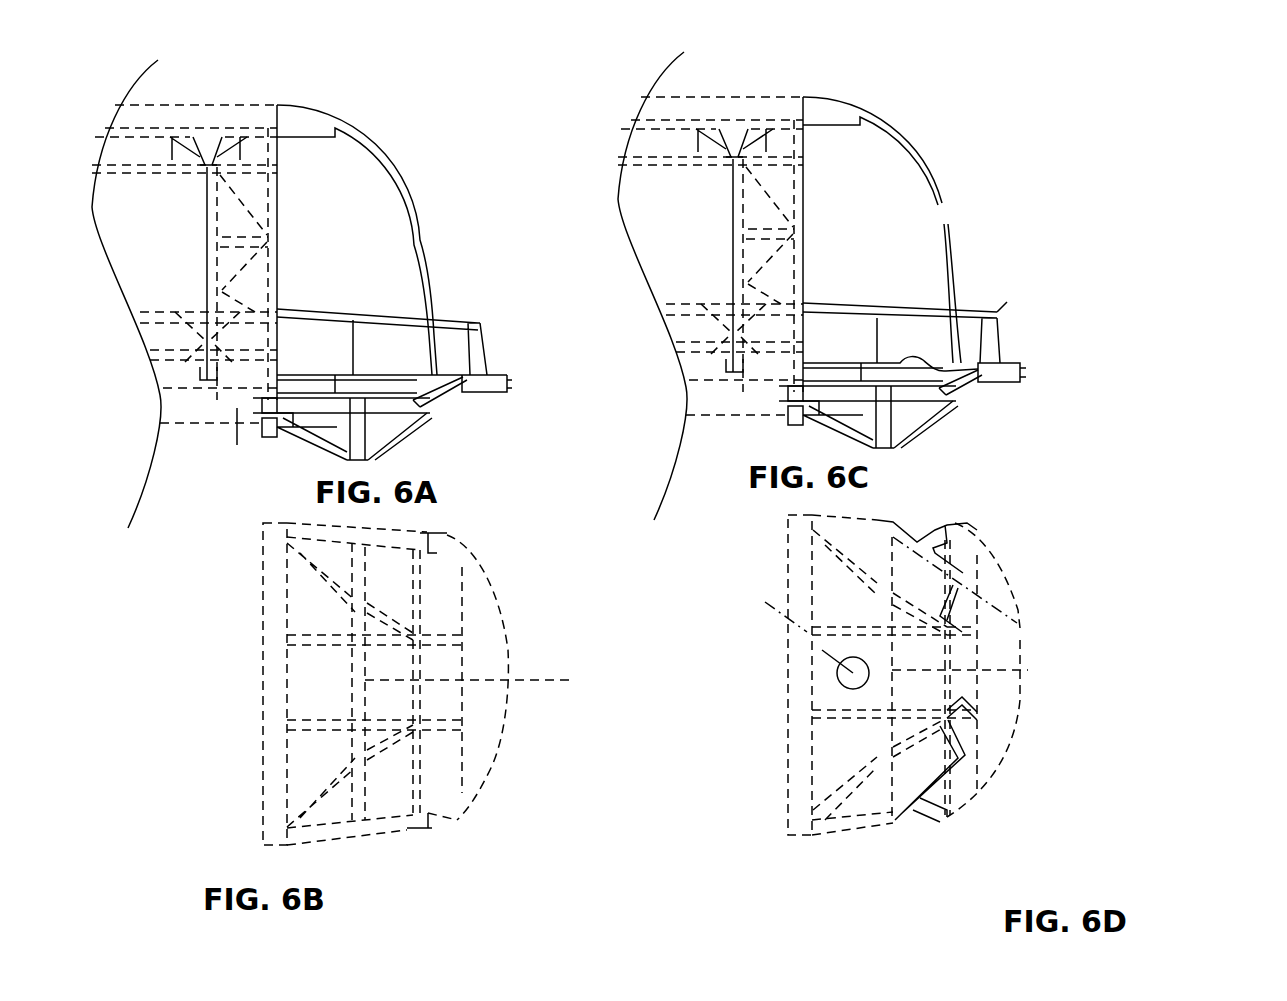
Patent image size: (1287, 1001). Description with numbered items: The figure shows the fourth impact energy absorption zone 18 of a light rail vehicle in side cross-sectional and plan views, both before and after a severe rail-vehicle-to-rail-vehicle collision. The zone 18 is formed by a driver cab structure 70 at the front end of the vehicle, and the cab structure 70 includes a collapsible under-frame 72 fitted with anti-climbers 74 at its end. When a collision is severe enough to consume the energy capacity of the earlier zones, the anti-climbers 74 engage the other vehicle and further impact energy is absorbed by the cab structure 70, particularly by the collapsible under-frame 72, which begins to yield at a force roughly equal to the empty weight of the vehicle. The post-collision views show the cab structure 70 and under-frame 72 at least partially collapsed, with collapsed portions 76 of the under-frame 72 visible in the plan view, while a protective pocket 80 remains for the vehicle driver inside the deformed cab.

In FIG. 6C, the fourth impact energy absorption zone 18 is at (1155, 164).
In FIG. 6A, the driver cab structure 70 is at (435, 147).
In FIG. 6C, the driver cab structure 70 is at (920, 99).
In FIG. 6B, the driver cab structure 70 is at (510, 549).
In FIG. 6D, the driver cab structure 70 is at (1062, 553).
In FIG. 6A, the collapsible under-frame 72 is at (237, 440).
In FIG. 6B, the collapsible under-frame 72 is at (405, 830).
In FIG. 6D, the collapsible under-frame 72 is at (815, 835).
In FIG. 6A, the anti-climbers 74 is at (490, 384).
In FIG. 6C, the anti-climbers 74 is at (1000, 382).
In FIG. 6D, the collapsed portions 76 is at (912, 542).
In FIG. 6D, the protective pocket 80 is at (820, 660).